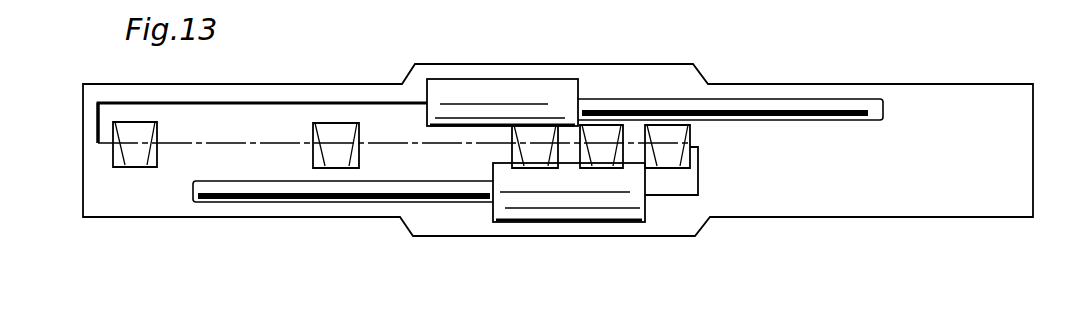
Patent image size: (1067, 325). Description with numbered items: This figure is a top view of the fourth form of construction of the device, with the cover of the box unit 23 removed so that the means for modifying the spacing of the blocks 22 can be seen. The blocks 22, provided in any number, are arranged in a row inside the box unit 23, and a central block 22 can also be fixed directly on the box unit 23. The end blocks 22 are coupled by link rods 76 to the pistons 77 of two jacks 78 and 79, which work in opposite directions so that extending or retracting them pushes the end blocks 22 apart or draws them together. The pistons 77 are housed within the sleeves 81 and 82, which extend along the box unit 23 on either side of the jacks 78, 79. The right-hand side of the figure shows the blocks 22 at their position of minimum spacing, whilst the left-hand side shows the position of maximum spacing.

The block 22 is at (153, 158).
The box unit 23 is at (883, 0).
The link rod 76 is at (95, 132).
The piston 77 is at (255, 103).
The jack 78 is at (510, 93).
The jack 79 is at (620, 200).
The sleeve 81 is at (803, 106).
The sleeve 82 is at (266, 190).